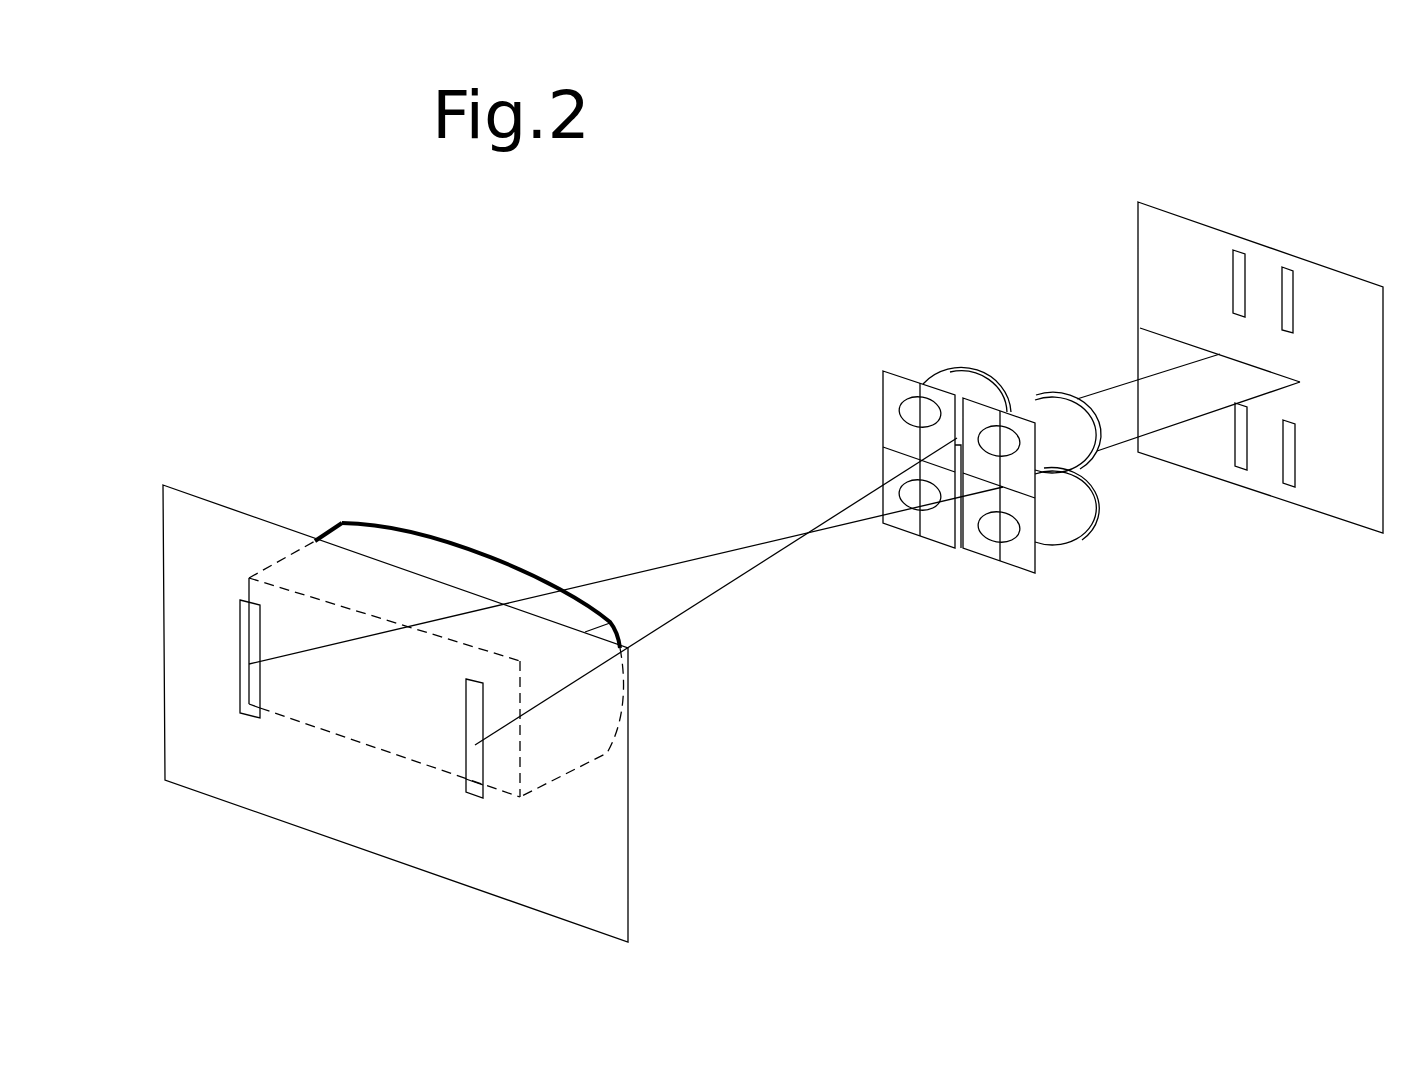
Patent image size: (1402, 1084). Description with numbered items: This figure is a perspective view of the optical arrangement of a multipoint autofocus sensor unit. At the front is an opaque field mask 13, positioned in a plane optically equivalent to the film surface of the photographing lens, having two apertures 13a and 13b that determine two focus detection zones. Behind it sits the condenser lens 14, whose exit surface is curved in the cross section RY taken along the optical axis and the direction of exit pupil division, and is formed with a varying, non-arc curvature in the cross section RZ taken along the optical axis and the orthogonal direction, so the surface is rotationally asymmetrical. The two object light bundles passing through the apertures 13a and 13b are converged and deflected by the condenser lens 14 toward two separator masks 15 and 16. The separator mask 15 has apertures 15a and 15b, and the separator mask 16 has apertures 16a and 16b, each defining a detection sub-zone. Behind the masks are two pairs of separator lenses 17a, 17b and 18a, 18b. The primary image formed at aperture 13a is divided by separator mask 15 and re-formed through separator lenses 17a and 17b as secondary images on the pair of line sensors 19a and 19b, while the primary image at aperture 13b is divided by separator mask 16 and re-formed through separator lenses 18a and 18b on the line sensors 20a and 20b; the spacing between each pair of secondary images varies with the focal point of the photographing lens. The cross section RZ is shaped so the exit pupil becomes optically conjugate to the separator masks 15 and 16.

The field mask 13 is at (213, 517).
The aperture 13a is at (473, 792).
The aperture 13b is at (250, 712).
The condenser lens 14 is at (427, 553).
The cross section RZ is at (515, 563).
The cross section RY is at (630, 690).
The separator mask 15 is at (878, 442).
The aperture 15a is at (892, 388).
The aperture 15b is at (903, 520).
The separator mask 16 is at (1043, 550).
The aperture 16a is at (1018, 428).
The aperture 16b is at (1022, 557).
The separator lens 17a is at (965, 378).
The separator lens 17b is at (963, 505).
The separator lens 18a is at (1057, 428).
The separator lens 18b is at (1073, 520).
The line sensor 19a is at (1240, 262).
The line sensor 19b is at (1240, 462).
The line sensor 20a is at (1288, 277).
The line sensor 20b is at (1287, 482).